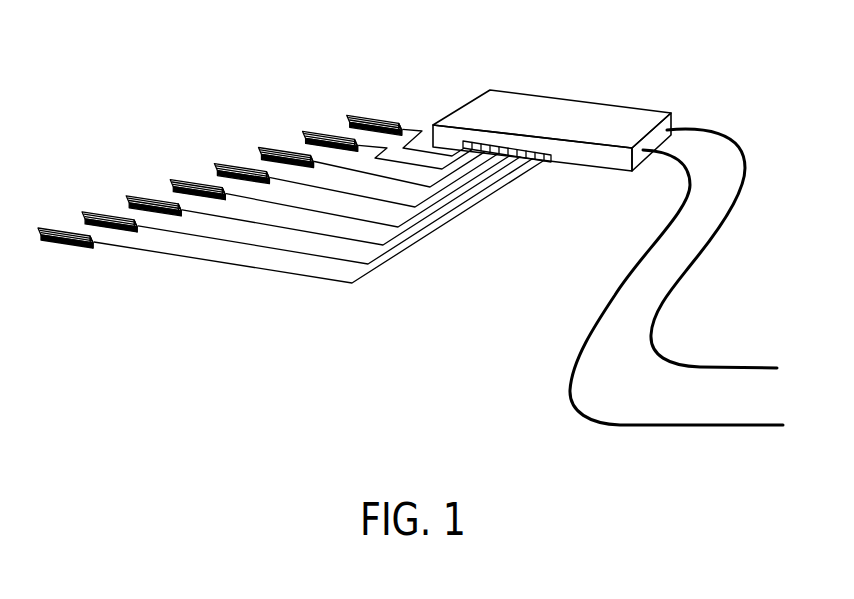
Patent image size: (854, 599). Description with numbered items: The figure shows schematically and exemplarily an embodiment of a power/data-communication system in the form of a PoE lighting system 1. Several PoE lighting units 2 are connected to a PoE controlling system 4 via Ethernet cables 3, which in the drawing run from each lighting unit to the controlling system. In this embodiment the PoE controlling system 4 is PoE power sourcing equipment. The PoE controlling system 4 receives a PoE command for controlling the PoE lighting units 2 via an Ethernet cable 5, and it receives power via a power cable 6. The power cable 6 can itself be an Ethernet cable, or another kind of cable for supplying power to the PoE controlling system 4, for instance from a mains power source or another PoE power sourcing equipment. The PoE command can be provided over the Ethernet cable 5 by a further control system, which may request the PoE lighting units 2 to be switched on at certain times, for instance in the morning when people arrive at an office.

The PoE lighting system 1 is at (208, 379).
The PoE lighting units 2 is at (66, 265).
The Ethernet cables 3 is at (357, 307).
The PoE controlling system 4 is at (480, 90).
The Ethernet cable 5 is at (712, 235).
The power cable 6 is at (600, 327).